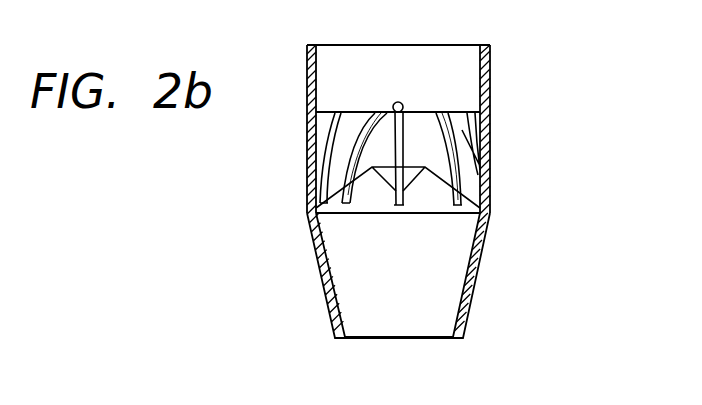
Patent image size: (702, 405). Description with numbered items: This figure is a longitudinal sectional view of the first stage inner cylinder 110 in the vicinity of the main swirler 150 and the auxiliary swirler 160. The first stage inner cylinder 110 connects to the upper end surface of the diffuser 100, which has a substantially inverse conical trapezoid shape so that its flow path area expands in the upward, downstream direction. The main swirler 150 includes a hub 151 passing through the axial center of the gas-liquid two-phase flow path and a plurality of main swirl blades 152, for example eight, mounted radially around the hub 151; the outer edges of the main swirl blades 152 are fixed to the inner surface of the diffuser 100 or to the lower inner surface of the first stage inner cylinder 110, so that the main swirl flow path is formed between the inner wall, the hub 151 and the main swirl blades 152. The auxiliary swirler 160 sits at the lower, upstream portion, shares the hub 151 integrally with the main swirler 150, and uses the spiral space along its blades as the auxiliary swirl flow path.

The diffuser 100 is at (321, 278).
The first stage inner cylinder 110 is at (488, 63).
The main swirler 150 is at (408, 103).
The hub 151 is at (403, 106).
The main swirl blade 152 is at (457, 150).
The auxiliary swirler 160 is at (419, 187).